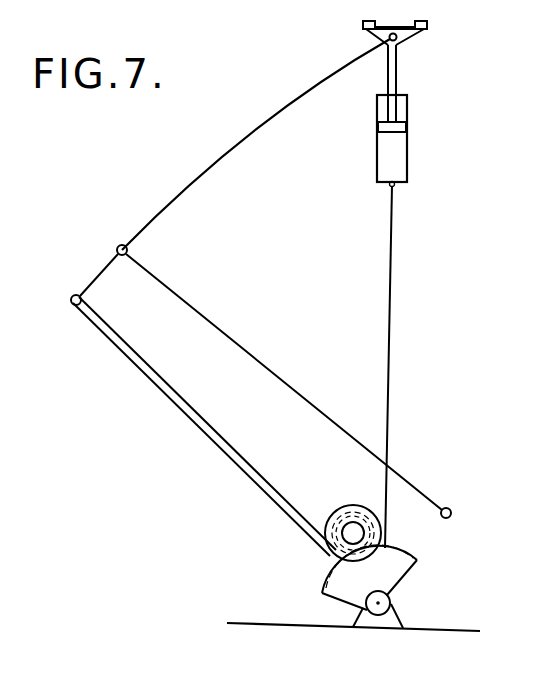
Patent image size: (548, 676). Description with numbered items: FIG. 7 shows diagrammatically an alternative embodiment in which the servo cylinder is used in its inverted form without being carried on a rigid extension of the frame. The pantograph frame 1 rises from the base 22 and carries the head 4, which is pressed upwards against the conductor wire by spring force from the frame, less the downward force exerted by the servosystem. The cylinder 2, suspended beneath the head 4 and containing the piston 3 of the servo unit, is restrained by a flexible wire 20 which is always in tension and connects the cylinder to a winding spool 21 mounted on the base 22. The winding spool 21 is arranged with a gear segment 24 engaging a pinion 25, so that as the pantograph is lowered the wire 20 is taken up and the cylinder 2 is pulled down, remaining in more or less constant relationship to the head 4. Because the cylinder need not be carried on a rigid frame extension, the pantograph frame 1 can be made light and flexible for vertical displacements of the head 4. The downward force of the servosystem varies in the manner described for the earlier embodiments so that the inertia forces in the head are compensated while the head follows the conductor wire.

The pantograph frame 1 is at (257, 130).
The cylinder 2 is at (407, 156).
The piston 3 is at (395, 127).
The head 4 is at (400, 35).
The flexible wire 20 is at (387, 342).
The winding spool 21 is at (342, 510).
The base 22 is at (273, 622).
The gear segment 24 is at (407, 580).
The pinion 25 is at (342, 535).